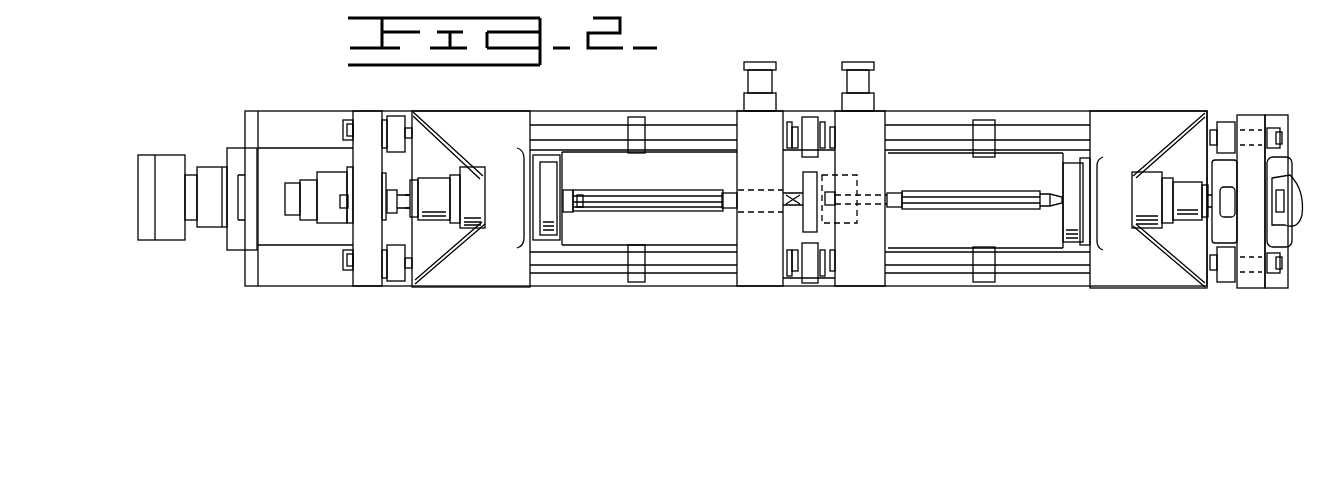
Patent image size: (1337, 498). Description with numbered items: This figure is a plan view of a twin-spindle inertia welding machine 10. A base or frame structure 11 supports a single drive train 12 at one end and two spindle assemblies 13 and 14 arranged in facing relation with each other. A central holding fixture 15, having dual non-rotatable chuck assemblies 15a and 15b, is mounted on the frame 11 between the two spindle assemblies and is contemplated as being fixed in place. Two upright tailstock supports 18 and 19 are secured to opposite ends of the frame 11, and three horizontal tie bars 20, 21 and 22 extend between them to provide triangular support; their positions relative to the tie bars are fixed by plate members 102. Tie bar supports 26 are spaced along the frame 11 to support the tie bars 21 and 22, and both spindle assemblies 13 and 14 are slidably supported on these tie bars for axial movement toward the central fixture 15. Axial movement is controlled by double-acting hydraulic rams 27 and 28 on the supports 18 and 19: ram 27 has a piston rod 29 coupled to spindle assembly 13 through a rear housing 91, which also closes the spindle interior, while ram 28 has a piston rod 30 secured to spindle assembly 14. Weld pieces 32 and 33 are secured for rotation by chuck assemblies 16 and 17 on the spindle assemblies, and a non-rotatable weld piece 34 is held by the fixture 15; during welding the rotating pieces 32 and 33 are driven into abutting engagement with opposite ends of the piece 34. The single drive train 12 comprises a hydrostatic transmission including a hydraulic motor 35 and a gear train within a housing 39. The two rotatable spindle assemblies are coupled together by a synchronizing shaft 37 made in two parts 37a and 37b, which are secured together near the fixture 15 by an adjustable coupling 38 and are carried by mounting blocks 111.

The twin-spindle inertia welding machine 10 is at (1026, 102).
The frame structure 11 is at (713, 278).
The single drive train 12 is at (226, 136).
The spindle assembly 13 is at (488, 153).
The spindle assembly 14 is at (1123, 152).
The central holding fixture 15 is at (788, 104).
The non-rotatable chuck assembly 15a is at (777, 148).
The non-rotatable chuck assembly 15b is at (878, 148).
The chuck assembly 16 is at (565, 188).
The chuck assembly 17 is at (1062, 187).
The upright tailstock support 18 is at (365, 118).
The upright tailstock support 19 is at (1248, 115).
The tie bar 20 is at (382, 200).
The tie bar 21 is at (942, 262).
The tie bar 22 is at (928, 132).
The tie bar support 26 is at (637, 277).
The double-acting hydraulic ram 27 is at (322, 168).
The double-acting hydraulic ram 28 is at (1305, 173).
The piston rod 29 is at (402, 208).
The piston rod 30 is at (1215, 193).
The weld piece 32 is at (577, 193).
The weld piece 33 is at (1043, 210).
The non-rotatable weld piece 34 is at (730, 193).
The hydraulic motor 35 is at (166, 160).
The synchronizing shaft 37 is at (725, 216).
The synchronizing shaft part 37a is at (632, 208).
The synchronizing shaft part 37b is at (950, 203).
The adjustable coupling 38 is at (845, 228).
The housing 39 is at (228, 240).
The rear housing 91 is at (413, 184).
The plate member 102 is at (343, 128).
The mounting block 111 is at (805, 218).